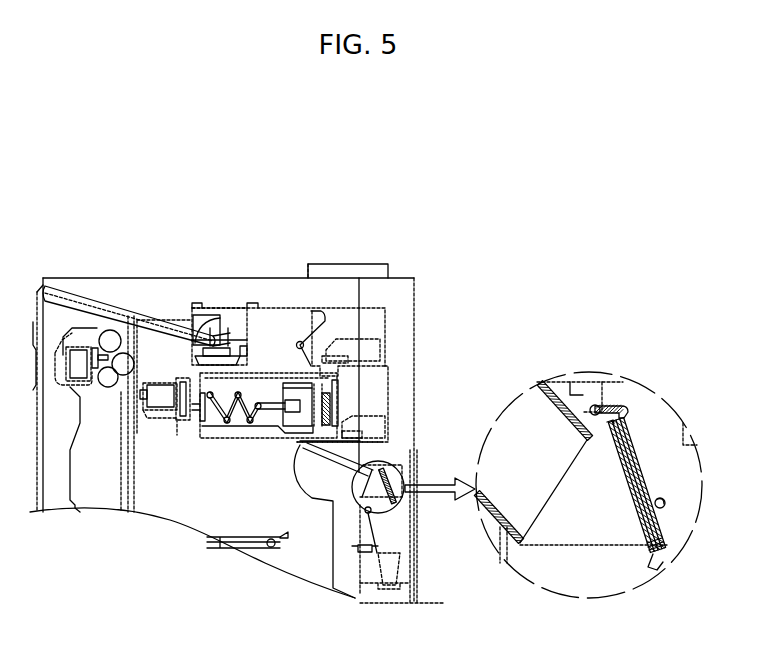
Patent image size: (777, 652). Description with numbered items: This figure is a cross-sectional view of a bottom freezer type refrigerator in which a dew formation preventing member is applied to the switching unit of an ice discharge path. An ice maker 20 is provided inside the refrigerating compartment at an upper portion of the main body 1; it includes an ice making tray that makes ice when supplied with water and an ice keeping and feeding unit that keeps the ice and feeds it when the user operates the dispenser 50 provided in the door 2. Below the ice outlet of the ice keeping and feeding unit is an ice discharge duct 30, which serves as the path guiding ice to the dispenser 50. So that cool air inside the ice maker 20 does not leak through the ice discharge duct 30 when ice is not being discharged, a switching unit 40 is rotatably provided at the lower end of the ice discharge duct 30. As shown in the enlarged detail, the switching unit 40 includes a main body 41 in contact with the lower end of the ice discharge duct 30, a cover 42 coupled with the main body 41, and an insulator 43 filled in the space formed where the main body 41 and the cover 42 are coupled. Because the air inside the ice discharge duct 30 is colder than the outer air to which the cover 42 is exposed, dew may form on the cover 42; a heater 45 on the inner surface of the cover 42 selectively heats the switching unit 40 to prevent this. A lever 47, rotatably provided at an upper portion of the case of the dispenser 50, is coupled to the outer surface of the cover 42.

The main body 1 is at (229, 278).
The door 2 is at (410, 318).
The ice maker 20 is at (253, 349).
The ice discharge duct 30 is at (362, 469).
The switching unit 40 is at (392, 472).
The main body 41 is at (652, 558).
The cover 42 is at (658, 521).
The insulator 43 is at (666, 543).
The heater 45 is at (645, 465).
The lever 47 is at (635, 443).
The dispenser 50 is at (447, 432).